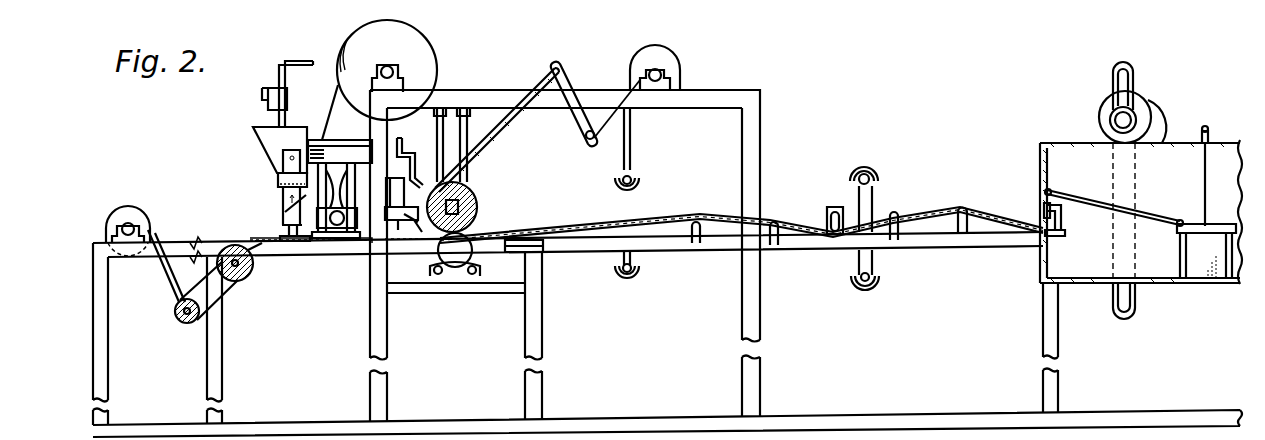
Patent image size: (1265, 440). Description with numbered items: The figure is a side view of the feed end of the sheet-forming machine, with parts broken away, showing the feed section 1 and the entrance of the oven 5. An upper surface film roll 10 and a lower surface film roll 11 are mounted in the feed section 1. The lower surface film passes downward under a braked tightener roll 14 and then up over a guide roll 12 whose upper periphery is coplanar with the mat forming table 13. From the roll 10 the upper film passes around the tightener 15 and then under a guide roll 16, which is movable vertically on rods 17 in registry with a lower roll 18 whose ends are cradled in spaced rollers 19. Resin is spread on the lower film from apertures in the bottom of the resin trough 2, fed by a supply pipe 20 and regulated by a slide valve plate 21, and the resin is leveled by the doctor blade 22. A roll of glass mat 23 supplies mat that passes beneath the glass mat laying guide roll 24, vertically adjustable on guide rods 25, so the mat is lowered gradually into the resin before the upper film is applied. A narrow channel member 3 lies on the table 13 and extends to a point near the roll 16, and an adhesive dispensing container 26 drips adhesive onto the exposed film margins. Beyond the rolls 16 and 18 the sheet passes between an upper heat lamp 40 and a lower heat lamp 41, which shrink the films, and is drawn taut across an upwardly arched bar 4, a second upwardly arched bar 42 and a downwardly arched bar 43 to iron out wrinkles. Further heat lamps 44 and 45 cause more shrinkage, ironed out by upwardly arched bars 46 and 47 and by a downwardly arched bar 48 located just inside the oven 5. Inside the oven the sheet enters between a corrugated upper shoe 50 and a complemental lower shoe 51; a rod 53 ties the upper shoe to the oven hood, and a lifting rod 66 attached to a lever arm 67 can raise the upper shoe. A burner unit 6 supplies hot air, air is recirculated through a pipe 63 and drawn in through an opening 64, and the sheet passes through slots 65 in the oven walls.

The feed section 1 is at (788, 94).
The resin trough 2 is at (270, 143).
The channel member 3 is at (518, 232).
The upwardly arched bar 4 is at (696, 246).
The oven 5 is at (1054, 143).
The burner unit 6 is at (1140, 64).
The upper surface film roll 10 is at (674, 56).
The lower surface film roll 11 is at (127, 207).
The guide roll 12 is at (250, 273).
The mat forming table 13 is at (320, 246).
The tightener roll 14 is at (187, 299).
The tightener 15 is at (575, 128).
The guide roll 16 is at (476, 200).
The guide rods 17 is at (444, 150).
The lower roll 18 is at (468, 258).
The rollers 19 is at (430, 270).
The supply pipe 20 is at (278, 69).
The slide valve plate 21 is at (278, 180).
The doctor blade 22 is at (283, 221).
The roll of glass mat 23 is at (430, 56).
The glass mat laying guide roll 24 is at (337, 208).
The guide rods 25 is at (323, 200).
The adhesive dispensing container 26 is at (406, 165).
The upper heat lamp 40 is at (640, 184).
The lower heat lamp 41 is at (626, 282).
The second upwardly arched bar 42 is at (777, 248).
The downwardly arched bar 43 is at (833, 216).
The heat lamp 44 is at (876, 172).
The heat lamp 45 is at (876, 284).
The upwardly arched bar 46 is at (898, 242).
The upwardly arched bar 47 is at (968, 240).
The downwardly arched bar 48 is at (1062, 214).
The upper shoe 50 is at (1190, 224).
The lower shoe 51 is at (1185, 240).
The rod 53 is at (1090, 200).
The pipe 63 is at (1136, 306).
The opening 64 is at (1132, 118).
The slot 65 is at (1044, 214).
The lifting rod 66 is at (1205, 170).
The lever arm 67 is at (1205, 127).